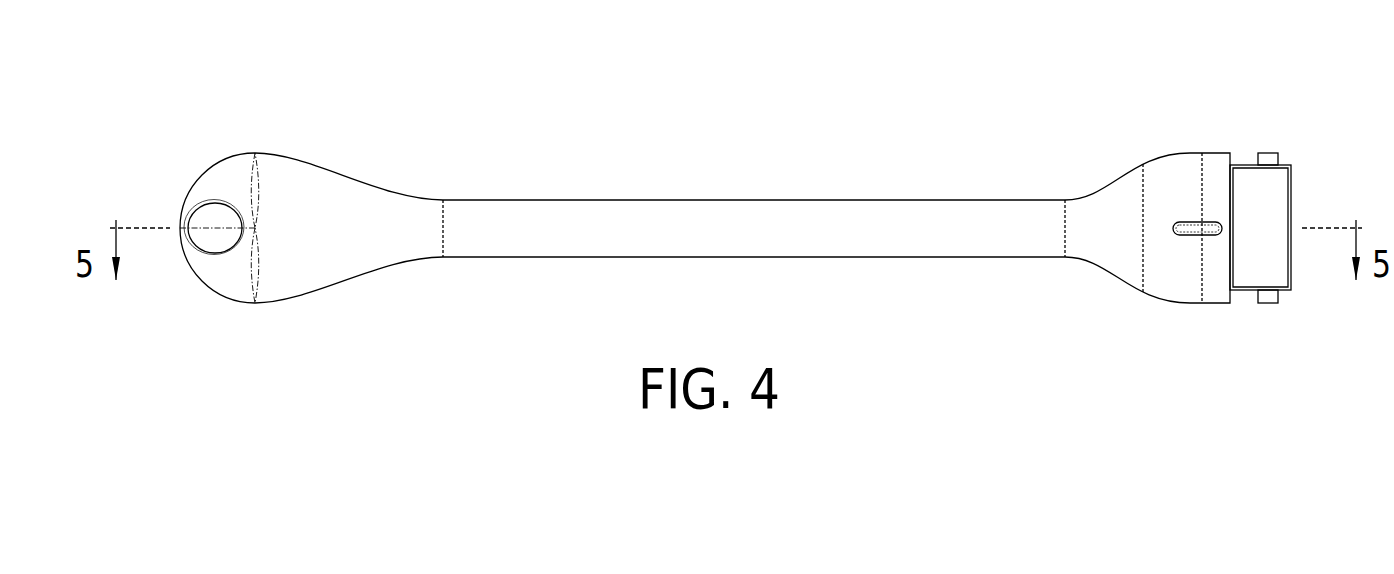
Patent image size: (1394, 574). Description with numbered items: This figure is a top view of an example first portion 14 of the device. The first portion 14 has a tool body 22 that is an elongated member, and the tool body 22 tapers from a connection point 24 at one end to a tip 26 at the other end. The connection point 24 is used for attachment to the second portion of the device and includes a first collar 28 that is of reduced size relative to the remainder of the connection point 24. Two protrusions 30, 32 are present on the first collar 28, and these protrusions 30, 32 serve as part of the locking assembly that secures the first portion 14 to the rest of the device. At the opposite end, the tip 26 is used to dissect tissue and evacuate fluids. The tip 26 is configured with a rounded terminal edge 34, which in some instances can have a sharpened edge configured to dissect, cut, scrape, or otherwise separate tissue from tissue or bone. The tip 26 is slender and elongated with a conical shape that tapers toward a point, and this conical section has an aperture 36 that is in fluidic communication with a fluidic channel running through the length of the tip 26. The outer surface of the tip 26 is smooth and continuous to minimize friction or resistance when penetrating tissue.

The first portion 14 is at (974, 100).
The tool body 22 is at (747, 200).
The connection point 24 is at (1260, 78).
The tip 26 is at (211, 118).
The first collar 28 is at (1273, 192).
The protrusion 30 is at (1266, 152).
The protrusion 32 is at (1268, 304).
The rounded terminal edge 34 is at (193, 185).
The aperture 36 is at (203, 237).